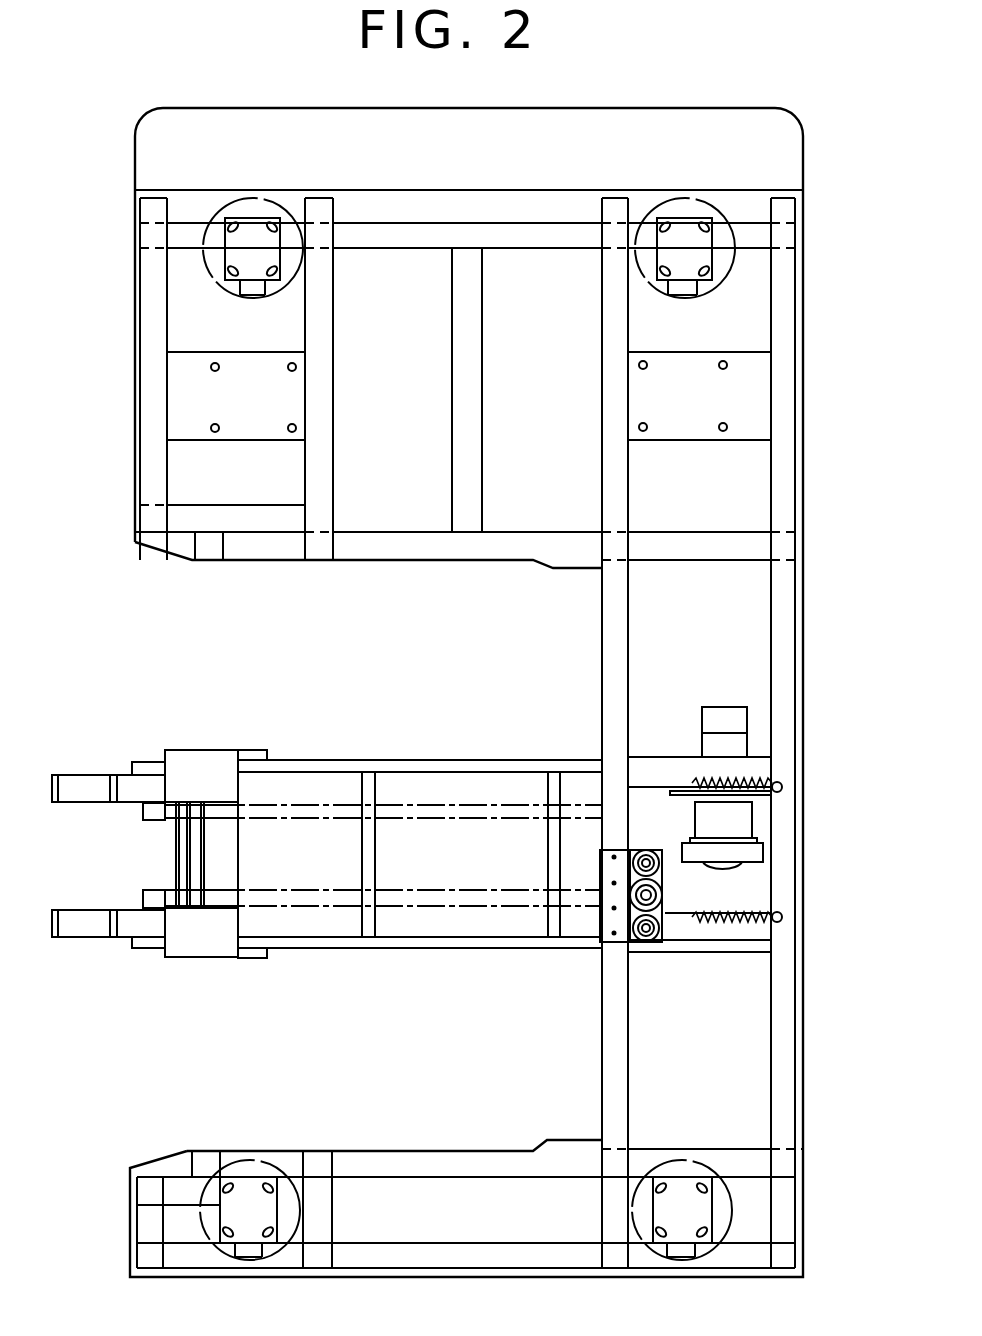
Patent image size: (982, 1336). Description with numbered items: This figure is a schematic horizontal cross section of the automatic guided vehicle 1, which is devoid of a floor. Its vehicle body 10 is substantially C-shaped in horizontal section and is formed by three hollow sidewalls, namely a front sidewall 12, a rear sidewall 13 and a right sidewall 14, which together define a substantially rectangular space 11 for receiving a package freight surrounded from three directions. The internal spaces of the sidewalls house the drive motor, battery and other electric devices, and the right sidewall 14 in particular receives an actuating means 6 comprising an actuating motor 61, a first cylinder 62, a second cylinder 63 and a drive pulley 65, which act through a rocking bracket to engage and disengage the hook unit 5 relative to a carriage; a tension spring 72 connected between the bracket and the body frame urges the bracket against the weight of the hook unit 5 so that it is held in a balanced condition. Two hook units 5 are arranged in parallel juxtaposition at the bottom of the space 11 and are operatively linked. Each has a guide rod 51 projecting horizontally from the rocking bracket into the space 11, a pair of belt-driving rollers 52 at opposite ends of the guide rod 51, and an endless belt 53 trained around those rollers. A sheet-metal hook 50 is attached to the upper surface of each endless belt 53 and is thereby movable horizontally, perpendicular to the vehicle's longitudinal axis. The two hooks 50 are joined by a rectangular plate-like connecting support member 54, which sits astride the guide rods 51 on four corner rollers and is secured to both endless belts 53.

The automatic guided vehicle 1 is at (122, 316).
The vehicle body 10 is at (813, 448).
The rectangular space 11 is at (297, 699).
The front sidewall 12 is at (405, 562).
The rear sidewall 13 is at (430, 1148).
The right sidewall 14 is at (600, 1030).
The hook unit 5 is at (405, 750).
The hook 50 is at (83, 788).
The guide rod 51 is at (482, 765).
The belt-driving roller 52 is at (143, 814).
The endless belt 53 is at (328, 897).
The connecting support member 54 is at (203, 776).
The actuating means 6 is at (678, 745).
The actuating motor 61 is at (725, 722).
The first cylinder 62 is at (641, 851).
The second cylinder 63 is at (640, 942).
The drive pulley 65 is at (745, 866).
The tension spring 72 is at (735, 779).